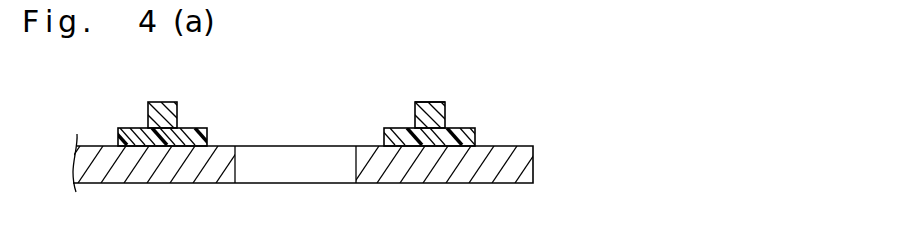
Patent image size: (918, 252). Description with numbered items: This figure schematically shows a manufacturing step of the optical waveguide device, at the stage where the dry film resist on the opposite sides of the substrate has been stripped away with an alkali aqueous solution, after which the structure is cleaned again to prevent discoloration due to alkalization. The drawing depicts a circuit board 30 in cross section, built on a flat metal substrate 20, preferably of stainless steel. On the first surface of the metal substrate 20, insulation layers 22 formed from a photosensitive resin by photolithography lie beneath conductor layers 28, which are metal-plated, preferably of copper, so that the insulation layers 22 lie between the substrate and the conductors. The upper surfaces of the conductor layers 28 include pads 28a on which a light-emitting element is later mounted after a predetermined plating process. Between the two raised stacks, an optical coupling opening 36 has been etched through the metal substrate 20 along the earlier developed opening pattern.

The metal substrate 20 is at (515, 167).
The insulation layers 22 is at (462, 135).
The conductor layers 28 is at (447, 115).
The pads 28a is at (427, 101).
The circuit board 30 is at (610, 70).
The optical coupling opening 36 is at (357, 172).